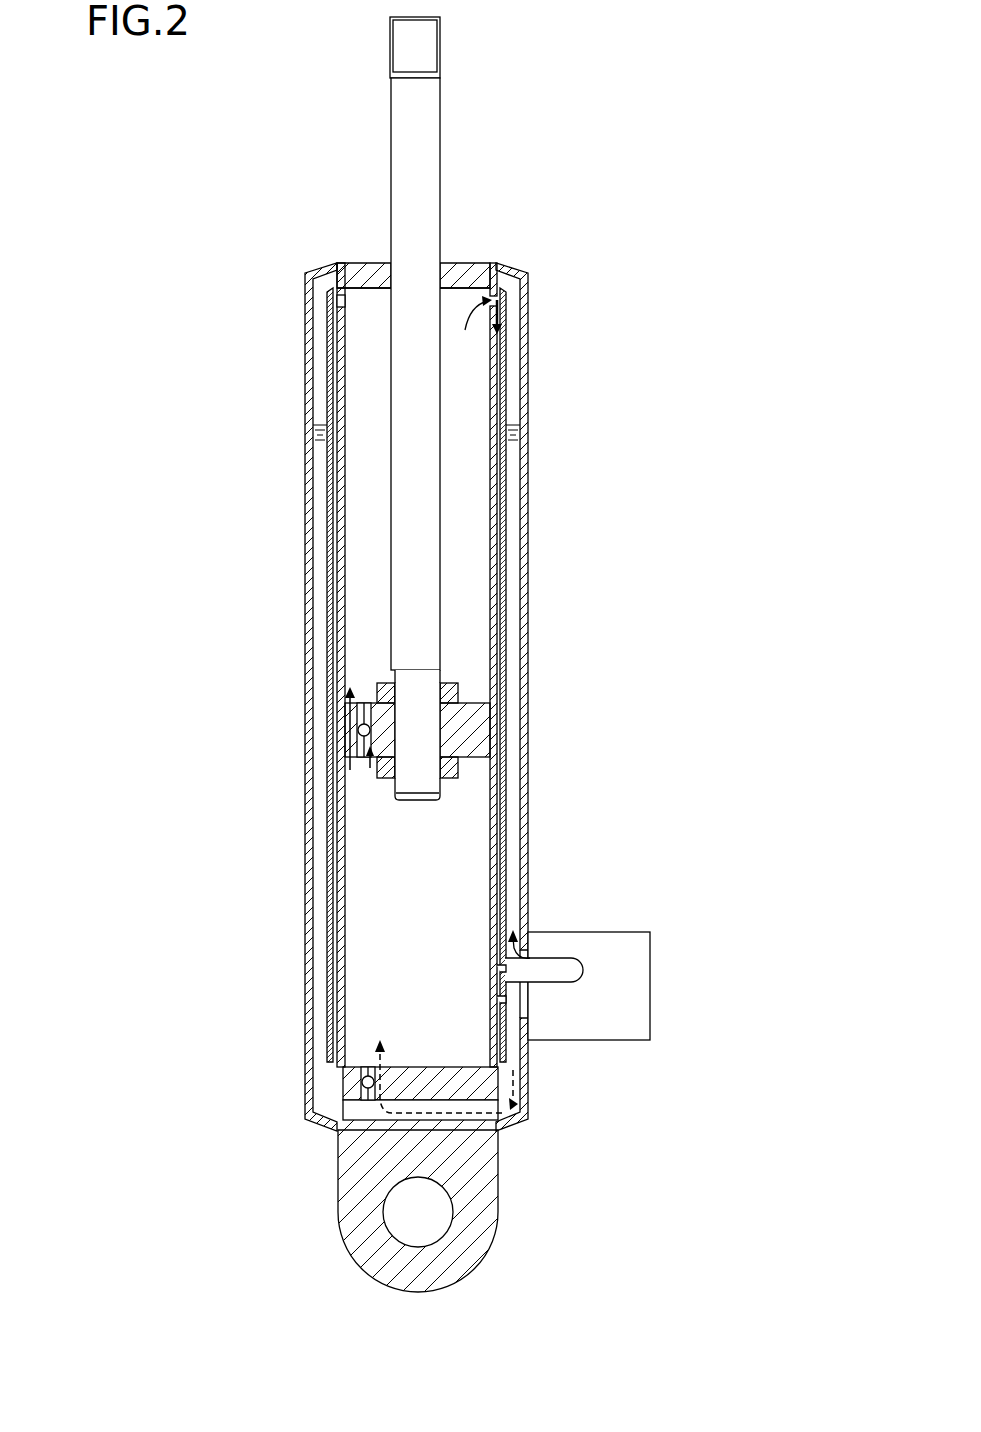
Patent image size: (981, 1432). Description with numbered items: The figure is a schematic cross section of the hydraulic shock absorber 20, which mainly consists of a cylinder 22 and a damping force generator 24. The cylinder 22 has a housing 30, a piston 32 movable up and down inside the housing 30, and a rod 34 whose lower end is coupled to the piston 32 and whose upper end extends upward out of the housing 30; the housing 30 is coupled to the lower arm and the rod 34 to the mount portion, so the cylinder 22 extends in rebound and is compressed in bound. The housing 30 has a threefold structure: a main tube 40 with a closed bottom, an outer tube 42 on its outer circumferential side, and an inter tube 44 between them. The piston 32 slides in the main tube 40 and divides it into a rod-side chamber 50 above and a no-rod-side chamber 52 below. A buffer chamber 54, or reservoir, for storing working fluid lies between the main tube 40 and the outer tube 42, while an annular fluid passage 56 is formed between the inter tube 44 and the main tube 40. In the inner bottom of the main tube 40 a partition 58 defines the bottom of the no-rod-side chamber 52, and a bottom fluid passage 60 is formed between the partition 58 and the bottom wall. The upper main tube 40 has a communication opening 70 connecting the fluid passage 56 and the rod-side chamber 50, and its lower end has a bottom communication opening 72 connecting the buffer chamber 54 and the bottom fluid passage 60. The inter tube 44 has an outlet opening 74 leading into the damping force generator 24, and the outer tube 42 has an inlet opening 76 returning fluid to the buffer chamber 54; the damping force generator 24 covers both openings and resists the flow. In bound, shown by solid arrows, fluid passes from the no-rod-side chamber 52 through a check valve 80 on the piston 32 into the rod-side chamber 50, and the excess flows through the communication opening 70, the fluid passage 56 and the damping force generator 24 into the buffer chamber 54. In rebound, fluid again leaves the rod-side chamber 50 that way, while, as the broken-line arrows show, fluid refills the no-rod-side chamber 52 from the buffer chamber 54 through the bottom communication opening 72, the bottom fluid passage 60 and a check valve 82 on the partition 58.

The hydraulic shock absorber 20 is at (678, 92).
The cylinder 22 is at (346, 156).
The damping force generator 24 is at (615, 906).
The housing 30 is at (262, 330).
The piston 32 is at (378, 690).
The rod 34 is at (430, 200).
The main tube 40 is at (336, 490).
The outer tube 42 is at (306, 548).
The inter tube 44 is at (507, 596).
The rod-side chamber 50 is at (380, 466).
The no-rod-side chamber 52 is at (427, 941).
The buffer chamber 54 is at (322, 525).
The annular fluid passage 56 is at (502, 622).
The partition 58 is at (427, 1078).
The bottom fluid passage 60 is at (372, 1113).
The communication opening 70 is at (490, 300).
The bottom communication opening 72 is at (497, 1110).
The outlet opening 74 is at (498, 997).
The inlet opening 76 is at (533, 955).
The check valve 80 is at (365, 742).
The check valve 82 is at (346, 1090).